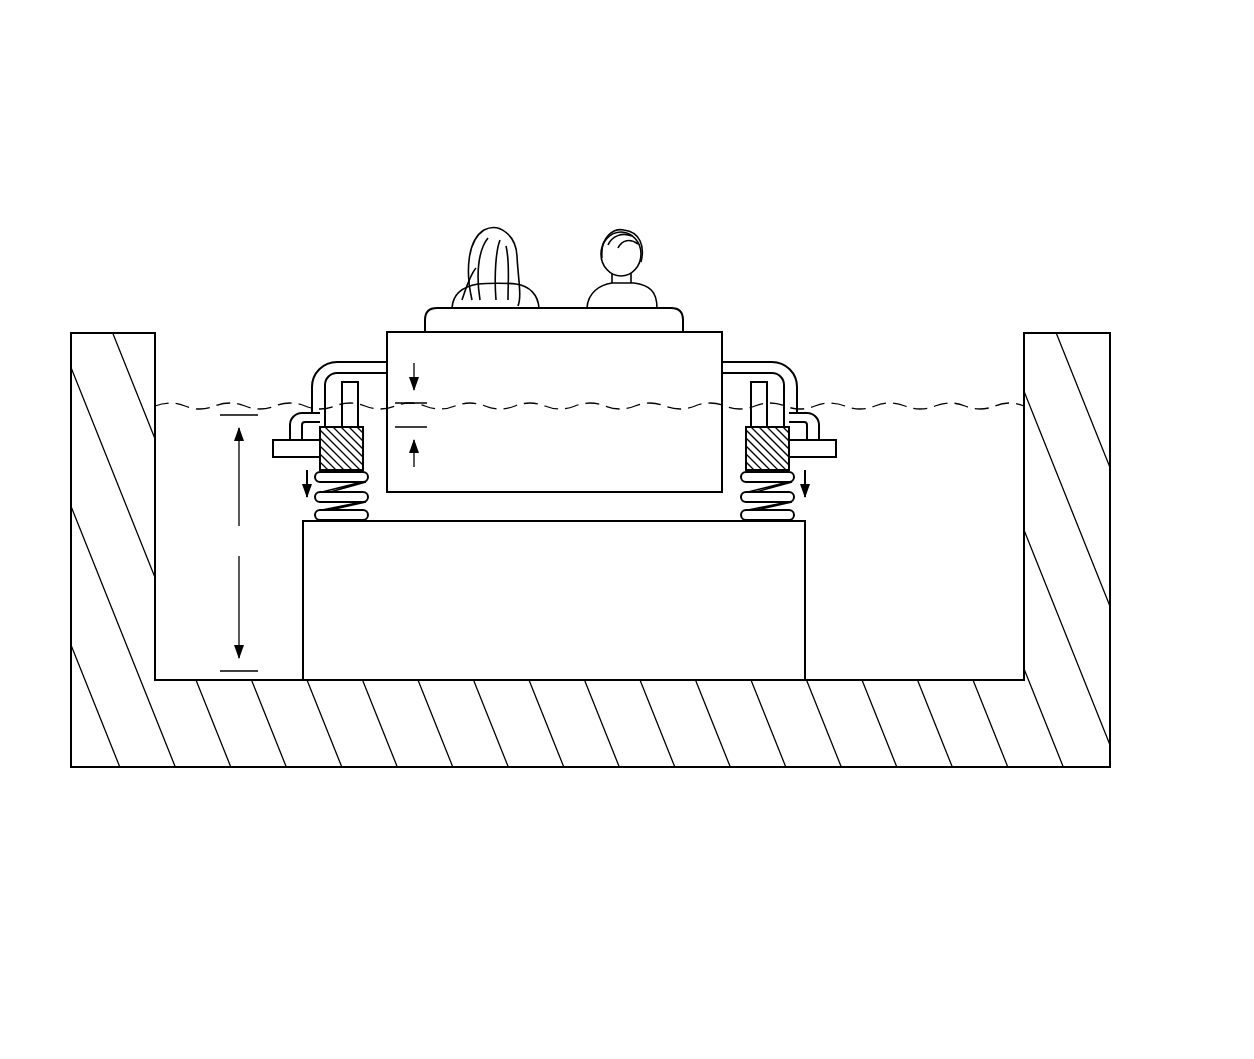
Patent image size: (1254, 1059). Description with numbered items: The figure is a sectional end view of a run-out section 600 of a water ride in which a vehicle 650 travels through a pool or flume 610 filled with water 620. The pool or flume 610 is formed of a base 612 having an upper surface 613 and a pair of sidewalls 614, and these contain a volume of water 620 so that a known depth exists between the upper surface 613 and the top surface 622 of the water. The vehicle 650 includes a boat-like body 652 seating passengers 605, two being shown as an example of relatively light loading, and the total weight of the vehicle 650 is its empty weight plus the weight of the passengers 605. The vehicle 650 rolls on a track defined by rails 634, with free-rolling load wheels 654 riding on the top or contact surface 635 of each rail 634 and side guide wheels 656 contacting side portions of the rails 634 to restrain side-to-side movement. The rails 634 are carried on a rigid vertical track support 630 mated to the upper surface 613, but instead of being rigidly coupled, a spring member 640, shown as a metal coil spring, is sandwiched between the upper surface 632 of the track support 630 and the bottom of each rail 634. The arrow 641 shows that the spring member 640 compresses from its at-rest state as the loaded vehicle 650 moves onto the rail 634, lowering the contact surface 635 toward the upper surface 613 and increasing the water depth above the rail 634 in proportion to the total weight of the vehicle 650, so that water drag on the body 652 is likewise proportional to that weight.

The run-out section 600 is at (960, 113).
The passengers 605 is at (607, 230).
The pool or flume 610 is at (1123, 724).
The base 612 is at (790, 738).
The upper surface 613 is at (915, 680).
The sidewalls 614 is at (1072, 506).
The water 620 is at (997, 443).
The top surface of the water 622 is at (963, 409).
The vertical track support 630 is at (830, 557).
The upper surface of the vertical track support 632 is at (653, 523).
The rails 634 is at (368, 462).
The top or contact surface of the rail 635 is at (325, 427).
The spring member 640 is at (290, 482).
The arrow 641 is at (302, 499).
The vehicle 650 is at (703, 305).
The body 652 is at (720, 338).
The load wheels 654 is at (766, 380).
The side guide wheels 656 is at (833, 440).